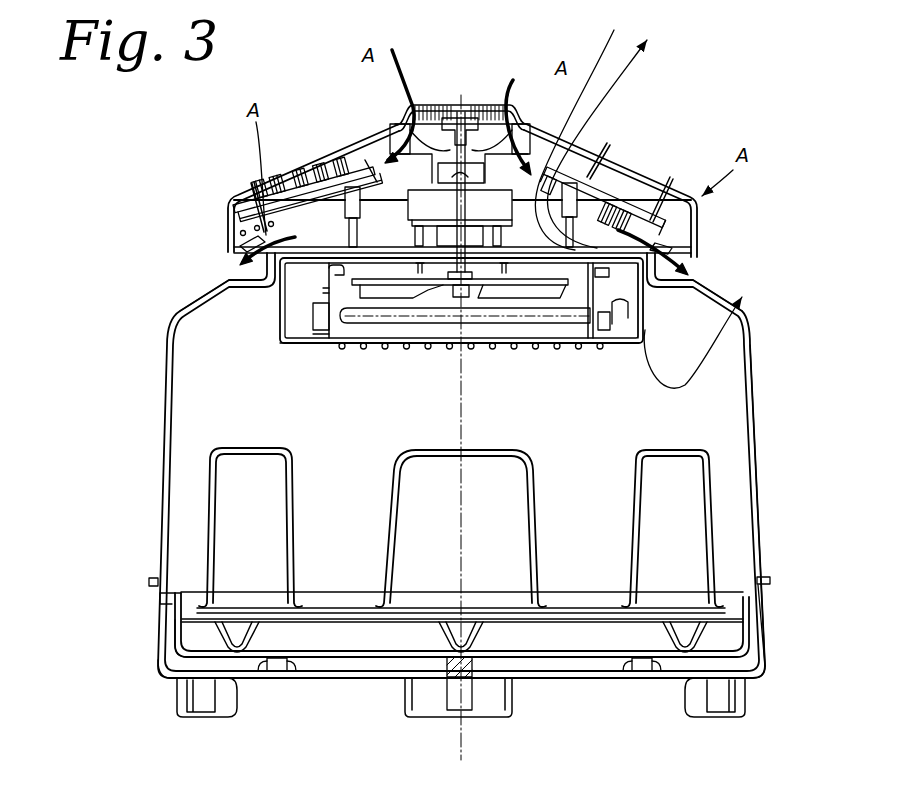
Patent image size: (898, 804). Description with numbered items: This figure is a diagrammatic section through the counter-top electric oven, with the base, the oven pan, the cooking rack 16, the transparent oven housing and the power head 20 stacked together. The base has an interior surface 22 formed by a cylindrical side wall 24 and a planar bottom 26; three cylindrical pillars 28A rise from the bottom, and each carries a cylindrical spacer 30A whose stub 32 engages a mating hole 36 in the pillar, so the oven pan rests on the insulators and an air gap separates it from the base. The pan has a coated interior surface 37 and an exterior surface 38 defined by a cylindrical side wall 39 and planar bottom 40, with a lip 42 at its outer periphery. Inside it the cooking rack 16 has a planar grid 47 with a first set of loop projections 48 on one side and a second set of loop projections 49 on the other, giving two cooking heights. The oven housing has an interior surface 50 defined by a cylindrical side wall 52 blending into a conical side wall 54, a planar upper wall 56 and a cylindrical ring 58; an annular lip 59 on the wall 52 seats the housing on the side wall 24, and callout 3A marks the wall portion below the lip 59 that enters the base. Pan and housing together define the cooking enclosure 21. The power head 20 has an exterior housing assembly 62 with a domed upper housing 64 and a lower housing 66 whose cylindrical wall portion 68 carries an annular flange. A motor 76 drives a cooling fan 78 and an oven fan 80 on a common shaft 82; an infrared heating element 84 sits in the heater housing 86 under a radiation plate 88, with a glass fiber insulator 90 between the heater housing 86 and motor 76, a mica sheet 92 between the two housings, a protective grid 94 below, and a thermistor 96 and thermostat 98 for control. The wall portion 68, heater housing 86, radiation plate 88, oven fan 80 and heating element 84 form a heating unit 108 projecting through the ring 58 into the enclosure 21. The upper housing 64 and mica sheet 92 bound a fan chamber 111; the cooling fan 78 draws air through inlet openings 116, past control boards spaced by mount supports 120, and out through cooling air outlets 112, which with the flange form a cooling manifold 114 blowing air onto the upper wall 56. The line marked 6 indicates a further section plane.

The section line 6 is at (655, 204).
The cooking rack 16 is at (683, 452).
The power head 20 is at (470, 101).
The cooking enclosure 21 is at (760, 438).
The interior surface 22 is at (743, 663).
The cylindrical side wall 24 is at (768, 625).
The planar bottom 26 is at (588, 680).
The cylindrical pillars 28A is at (258, 667).
The cylindrical spacers 30A is at (290, 673).
The cylindrical stub 32 is at (365, 745).
The mating hole 36 is at (397, 765).
The interior surface 37 is at (195, 648).
The exterior surface 38 is at (170, 678).
The cylindrical side wall 39 is at (173, 643).
The planar bottom 40 is at (333, 673).
The lip 42 is at (162, 598).
The planar grid 47 is at (333, 607).
The first set of loop projections 48 is at (252, 636).
The second set of loop projections 49 is at (287, 482).
The interior surface 50 is at (172, 405).
The generally cylindrical side wall 52 is at (163, 405).
The generally conical-shaped side wall 54 is at (193, 300).
The planar upper wall 56 is at (247, 280).
The generally cylindrical ring 58 is at (230, 257).
The annular lip 59 is at (150, 578).
The exterior housing assembly 62 is at (702, 199).
The domed shape upper housing 64 is at (608, 148).
The lower housing 66 is at (640, 303).
The cylindrical wall portion 68 is at (613, 313).
The motor 76 is at (410, 195).
The cooling fan 78 is at (573, 157).
The oven fan 80 is at (560, 273).
The common shaft 82 is at (345, 180).
The infrared electric heating element 84 is at (553, 290).
The heater housing 86 is at (603, 290).
The radiation plate 88 is at (643, 293).
The glass fiber thermal insulator 90 is at (312, 262).
The mica sheet 92 is at (586, 127).
The protective grid 94 is at (410, 348).
The thermistor 96 is at (327, 270).
The thermostat 98 is at (321, 320).
The heating unit 108 is at (310, 357).
The fan chamber 111 is at (598, 142).
The cooling air outlets 112 is at (243, 240).
The cooling manifold 114 is at (700, 283).
The inlet openings 116 is at (421, 104).
The mount supports 120 is at (252, 203).
The rim detail 3A is at (757, 600).